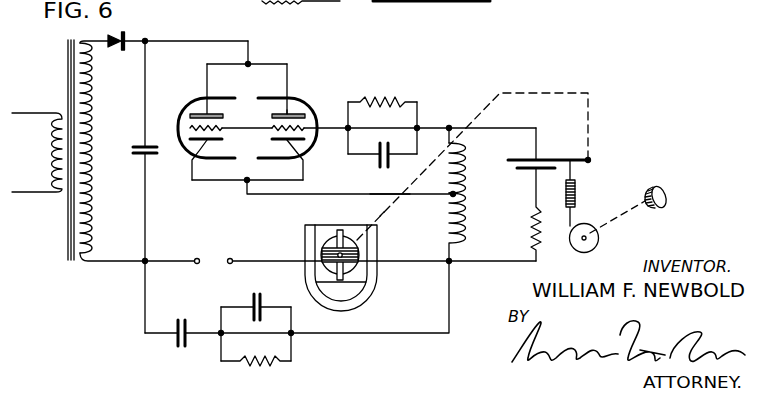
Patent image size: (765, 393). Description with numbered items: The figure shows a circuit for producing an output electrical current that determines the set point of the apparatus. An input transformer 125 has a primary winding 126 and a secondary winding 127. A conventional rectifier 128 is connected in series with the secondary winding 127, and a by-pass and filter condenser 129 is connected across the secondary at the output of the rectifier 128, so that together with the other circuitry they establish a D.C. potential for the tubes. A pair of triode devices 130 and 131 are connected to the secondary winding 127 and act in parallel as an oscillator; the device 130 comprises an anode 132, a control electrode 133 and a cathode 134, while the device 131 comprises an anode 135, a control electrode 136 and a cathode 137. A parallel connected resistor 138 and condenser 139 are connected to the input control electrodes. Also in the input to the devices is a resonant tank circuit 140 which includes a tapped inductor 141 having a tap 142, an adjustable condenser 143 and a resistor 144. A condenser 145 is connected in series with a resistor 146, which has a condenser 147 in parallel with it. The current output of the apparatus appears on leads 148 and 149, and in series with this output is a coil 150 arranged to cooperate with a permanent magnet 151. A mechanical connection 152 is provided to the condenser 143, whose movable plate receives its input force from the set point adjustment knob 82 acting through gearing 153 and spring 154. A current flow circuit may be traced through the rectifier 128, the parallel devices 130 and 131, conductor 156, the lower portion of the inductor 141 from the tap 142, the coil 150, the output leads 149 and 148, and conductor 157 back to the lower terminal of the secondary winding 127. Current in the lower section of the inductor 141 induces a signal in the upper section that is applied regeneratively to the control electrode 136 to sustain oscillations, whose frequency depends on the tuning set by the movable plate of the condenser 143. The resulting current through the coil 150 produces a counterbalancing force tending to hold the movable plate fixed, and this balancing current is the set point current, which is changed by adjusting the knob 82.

The set point adjustment knob 82 is at (662, 194).
The input transformer 125 is at (60, 90).
The primary winding 126 is at (53, 146).
The secondary winding 127 is at (88, 166).
The rectifier 128 is at (117, 49).
The filter condenser 129 is at (132, 148).
The triode device 130 is at (201, 88).
The triode device 131 is at (290, 90).
The anode 132 is at (200, 108).
The control electrode 133 is at (193, 122).
The cathode 134 is at (197, 157).
The anode 135 is at (289, 110).
The control electrode 136 is at (304, 128).
The cathode 137 is at (292, 158).
The resistor 138 is at (386, 96).
The condenser 139 is at (384, 143).
The resonant tank circuit 140 is at (527, 121).
The tapped inductor 141 is at (451, 176).
The tap 142 is at (452, 208).
The adjustable condenser 143 is at (516, 165).
The resistor 144 is at (531, 222).
The condenser 145 is at (181, 318).
The resistor 146 is at (258, 354).
The condenser 147 is at (257, 293).
The lead 148 is at (197, 257).
The lead 149 is at (230, 257).
The coil 150 is at (333, 237).
The permanent magnet 151 is at (369, 288).
The mechanical connection 152 is at (386, 212).
The gearing 153 is at (596, 241).
The spring 154 is at (577, 188).
The conductor 156 is at (390, 193).
The conductor 157 is at (130, 262).